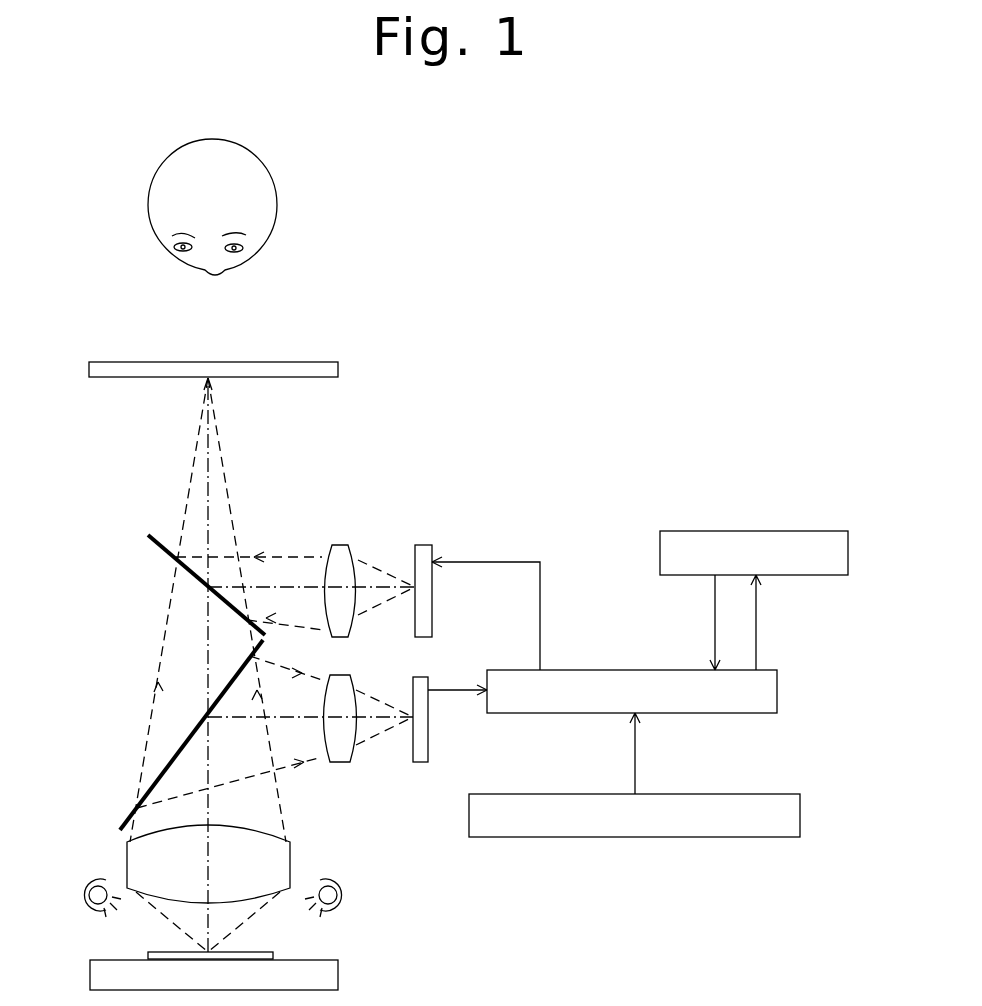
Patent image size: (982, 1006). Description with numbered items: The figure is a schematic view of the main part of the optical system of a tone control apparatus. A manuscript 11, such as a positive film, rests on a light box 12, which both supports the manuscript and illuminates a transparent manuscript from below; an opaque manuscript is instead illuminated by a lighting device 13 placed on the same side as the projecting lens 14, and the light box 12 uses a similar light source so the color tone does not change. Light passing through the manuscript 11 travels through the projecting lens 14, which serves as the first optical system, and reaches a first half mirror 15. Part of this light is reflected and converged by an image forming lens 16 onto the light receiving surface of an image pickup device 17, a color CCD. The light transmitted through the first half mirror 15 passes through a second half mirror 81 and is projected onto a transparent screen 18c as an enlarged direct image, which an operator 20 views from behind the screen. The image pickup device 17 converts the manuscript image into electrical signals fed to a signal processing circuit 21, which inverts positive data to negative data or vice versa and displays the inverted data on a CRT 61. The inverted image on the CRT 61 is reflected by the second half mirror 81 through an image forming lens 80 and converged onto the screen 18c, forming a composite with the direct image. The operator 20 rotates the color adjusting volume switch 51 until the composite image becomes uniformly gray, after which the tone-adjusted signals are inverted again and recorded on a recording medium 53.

The operator 20 is at (277, 212).
The transparent screen 18c is at (338, 370).
The second half mirror 81 is at (162, 548).
The image forming lens 80 is at (340, 545).
The CRT 61 is at (424, 545).
The image forming lens 16 is at (341, 755).
The image pickup device 17 is at (423, 762).
The first half mirror 15 is at (130, 808).
The projecting lens 14 is at (288, 860).
The lighting device 13 is at (86, 893).
The manuscript 11 is at (148, 956).
The light box 12 is at (100, 975).
The recording medium 53 is at (808, 531).
The signal processing circuit 21 is at (652, 670).
The color adjusting volume switch 51 is at (775, 837).